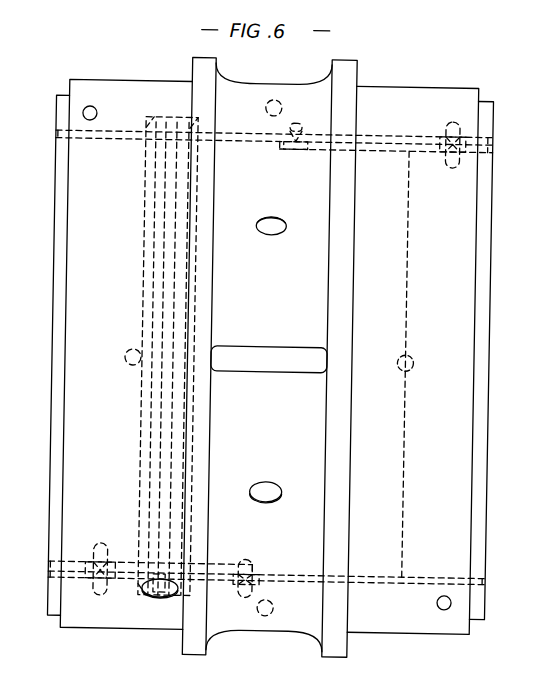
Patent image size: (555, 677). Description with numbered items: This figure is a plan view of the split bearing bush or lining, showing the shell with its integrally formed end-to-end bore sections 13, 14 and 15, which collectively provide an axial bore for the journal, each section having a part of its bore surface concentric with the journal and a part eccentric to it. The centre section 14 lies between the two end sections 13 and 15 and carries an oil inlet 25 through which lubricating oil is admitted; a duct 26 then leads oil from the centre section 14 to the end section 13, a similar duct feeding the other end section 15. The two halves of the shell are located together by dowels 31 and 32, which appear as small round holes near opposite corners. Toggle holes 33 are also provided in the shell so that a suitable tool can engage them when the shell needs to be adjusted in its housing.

The end bore section 13 is at (100, 407).
The centre bore section 14 is at (271, 437).
The end bore section 15 is at (442, 261).
The oil inlet 25 is at (283, 355).
The duct 26 is at (50, 588).
The dowel 31 is at (88, 109).
The dowel 32 is at (452, 603).
The toggle hole 33 is at (274, 235).